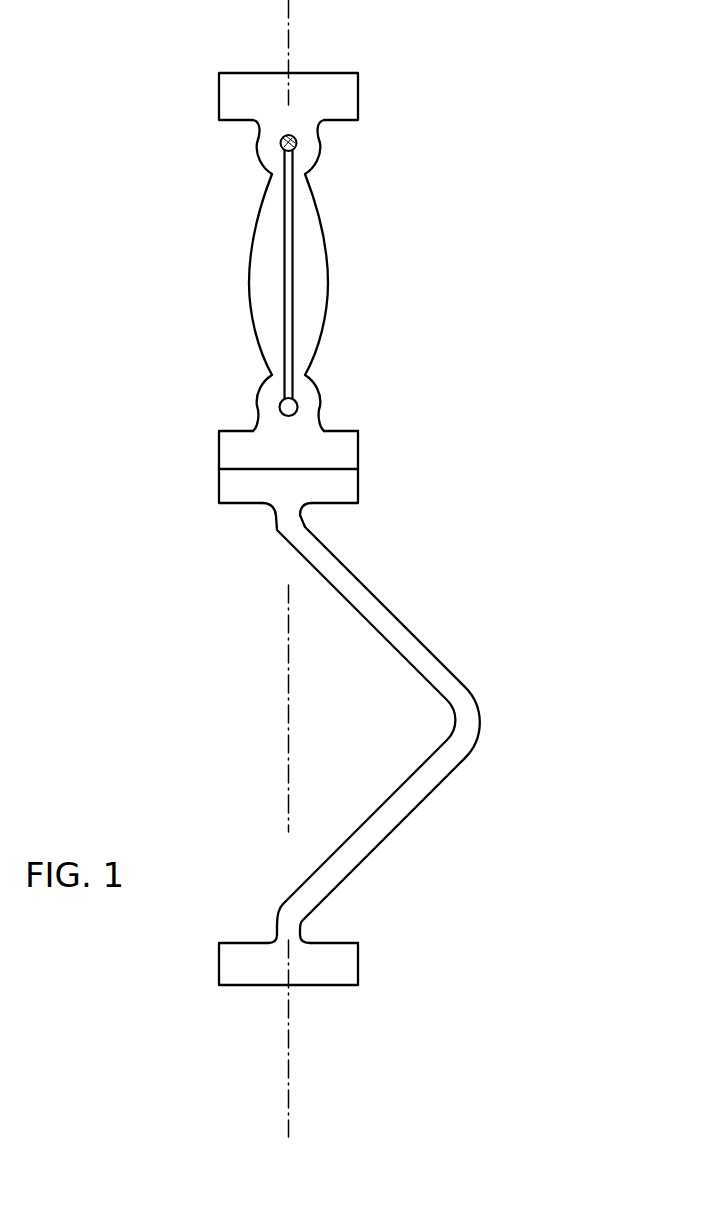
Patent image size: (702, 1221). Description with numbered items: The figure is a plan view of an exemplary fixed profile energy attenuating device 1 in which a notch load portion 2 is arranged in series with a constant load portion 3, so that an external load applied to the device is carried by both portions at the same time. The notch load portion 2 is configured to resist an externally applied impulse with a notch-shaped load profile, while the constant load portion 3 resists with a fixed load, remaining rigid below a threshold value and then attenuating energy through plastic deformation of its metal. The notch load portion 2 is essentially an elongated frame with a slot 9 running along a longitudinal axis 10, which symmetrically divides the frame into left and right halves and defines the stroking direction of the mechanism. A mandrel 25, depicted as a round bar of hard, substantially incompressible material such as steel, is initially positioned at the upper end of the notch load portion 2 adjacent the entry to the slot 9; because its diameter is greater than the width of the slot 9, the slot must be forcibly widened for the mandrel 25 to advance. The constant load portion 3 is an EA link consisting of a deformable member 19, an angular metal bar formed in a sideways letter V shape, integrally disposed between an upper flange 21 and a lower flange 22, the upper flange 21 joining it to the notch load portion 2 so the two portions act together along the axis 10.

The fixed profile energy attenuating device 1 is at (556, 94).
The notch load portion 2 is at (112, 226).
The constant load portion 3 is at (182, 710).
The slot 9 is at (293, 325).
The longitudinal axis 10 is at (287, 45).
The deformable member 19 is at (480, 702).
The upper flange 21 is at (358, 487).
The lower flange 22 is at (358, 963).
The mandrel 25 is at (297, 143).